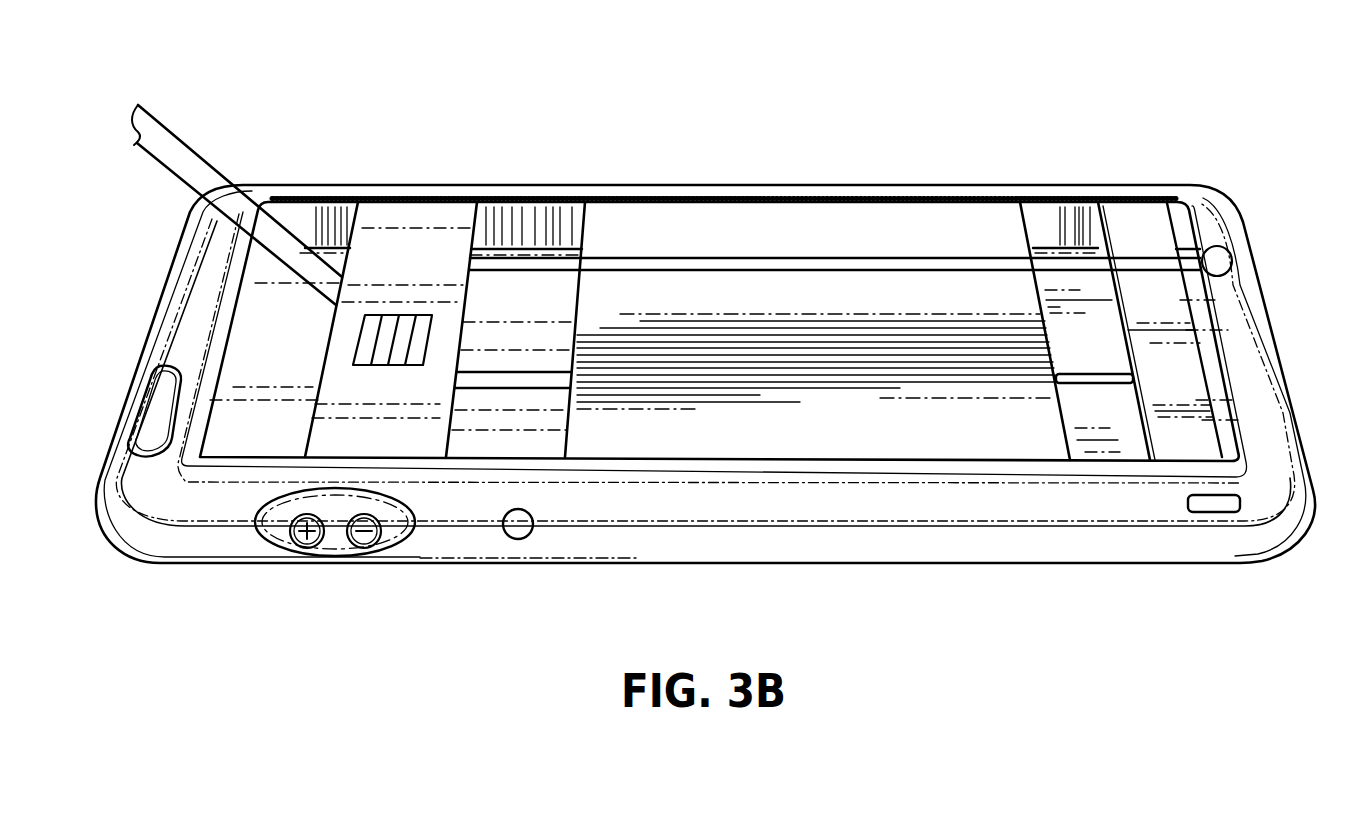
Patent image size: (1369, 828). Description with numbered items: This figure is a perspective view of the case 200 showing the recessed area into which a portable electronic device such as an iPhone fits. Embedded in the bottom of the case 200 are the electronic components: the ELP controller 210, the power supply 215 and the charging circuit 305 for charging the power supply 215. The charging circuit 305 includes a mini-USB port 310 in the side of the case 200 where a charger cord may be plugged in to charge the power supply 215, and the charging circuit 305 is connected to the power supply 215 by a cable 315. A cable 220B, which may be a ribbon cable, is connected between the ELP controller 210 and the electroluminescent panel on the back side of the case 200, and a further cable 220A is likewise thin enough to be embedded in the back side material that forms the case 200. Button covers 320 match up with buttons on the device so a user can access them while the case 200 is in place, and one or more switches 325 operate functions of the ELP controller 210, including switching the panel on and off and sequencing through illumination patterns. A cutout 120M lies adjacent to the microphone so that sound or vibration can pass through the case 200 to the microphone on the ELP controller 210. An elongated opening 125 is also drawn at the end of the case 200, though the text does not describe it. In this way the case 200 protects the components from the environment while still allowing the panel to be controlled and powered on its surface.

The case 200 is at (1200, 198).
The cutout 120M is at (1221, 261).
The speaker 125 is at (157, 412).
The ELP controller 210 is at (410, 245).
The power supply 215 is at (768, 233).
The cable 220A is at (525, 370).
The cable 220B is at (182, 165).
The charging circuit 305 is at (1130, 222).
The mini-USB port 310 is at (1212, 508).
The cable 315 is at (1093, 385).
The button covers 320 is at (334, 532).
The switches 325 is at (516, 528).